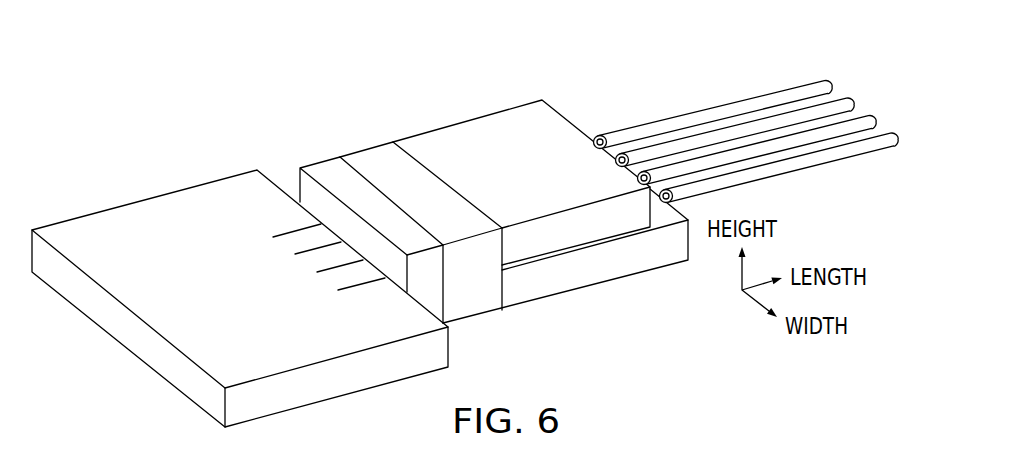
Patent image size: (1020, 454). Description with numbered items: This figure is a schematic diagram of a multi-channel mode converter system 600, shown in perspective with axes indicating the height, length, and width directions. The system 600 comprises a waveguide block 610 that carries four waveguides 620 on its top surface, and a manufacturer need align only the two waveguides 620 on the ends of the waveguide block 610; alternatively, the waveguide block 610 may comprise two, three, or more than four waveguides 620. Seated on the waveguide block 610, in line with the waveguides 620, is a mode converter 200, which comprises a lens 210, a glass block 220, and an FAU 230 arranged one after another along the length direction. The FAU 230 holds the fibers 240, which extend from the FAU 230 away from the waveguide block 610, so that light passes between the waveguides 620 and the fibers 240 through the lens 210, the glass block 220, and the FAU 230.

The multi-channel mode converter system 600 is at (220, 69).
The waveguide block 610 is at (152, 208).
The waveguides 620 is at (264, 215).
The single-channel mode converter 200 is at (405, 80).
The lens 210 is at (322, 172).
The glass block 220 is at (378, 155).
The FAU 230 is at (478, 128).
The fiber 240 is at (707, 94).